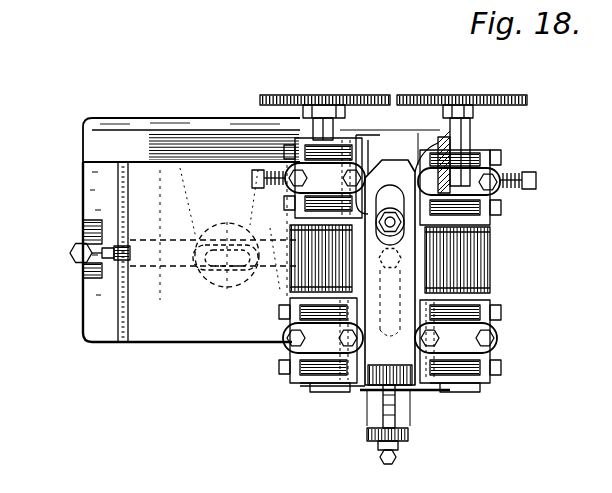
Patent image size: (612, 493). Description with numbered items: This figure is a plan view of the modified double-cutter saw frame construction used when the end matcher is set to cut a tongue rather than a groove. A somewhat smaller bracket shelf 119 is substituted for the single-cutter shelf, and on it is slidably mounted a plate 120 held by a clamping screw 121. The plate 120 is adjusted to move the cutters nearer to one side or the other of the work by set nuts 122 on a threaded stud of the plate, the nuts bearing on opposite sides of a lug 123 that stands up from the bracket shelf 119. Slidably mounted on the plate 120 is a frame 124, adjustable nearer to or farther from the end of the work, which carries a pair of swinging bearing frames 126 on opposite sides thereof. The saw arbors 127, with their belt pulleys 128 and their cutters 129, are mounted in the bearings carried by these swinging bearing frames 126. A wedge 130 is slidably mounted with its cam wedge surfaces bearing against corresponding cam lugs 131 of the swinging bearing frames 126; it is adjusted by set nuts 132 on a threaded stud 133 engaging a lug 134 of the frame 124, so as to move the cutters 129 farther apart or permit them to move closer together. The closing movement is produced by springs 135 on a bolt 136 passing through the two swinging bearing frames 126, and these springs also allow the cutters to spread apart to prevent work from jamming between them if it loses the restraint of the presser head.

The bracket shelf 119 is at (92, 121).
The plate 120 is at (192, 338).
The clamping screw 121 is at (206, 273).
The set nuts 122 is at (74, 270).
The lug 123 is at (88, 232).
The frame 124 is at (360, 389).
The swinging bearing frames 126 is at (497, 152).
The saw arbors 127 is at (305, 136).
The belt pulleys 128 is at (298, 282).
The cutters 129 is at (412, 94).
The wedge 130 is at (366, 140).
The cam lugs 131 is at (436, 150).
The set nuts 132 is at (408, 439).
The threaded stud 133 is at (400, 408).
The lug 134 is at (376, 438).
The springs 135 is at (292, 188).
The bolt 136 is at (252, 178).